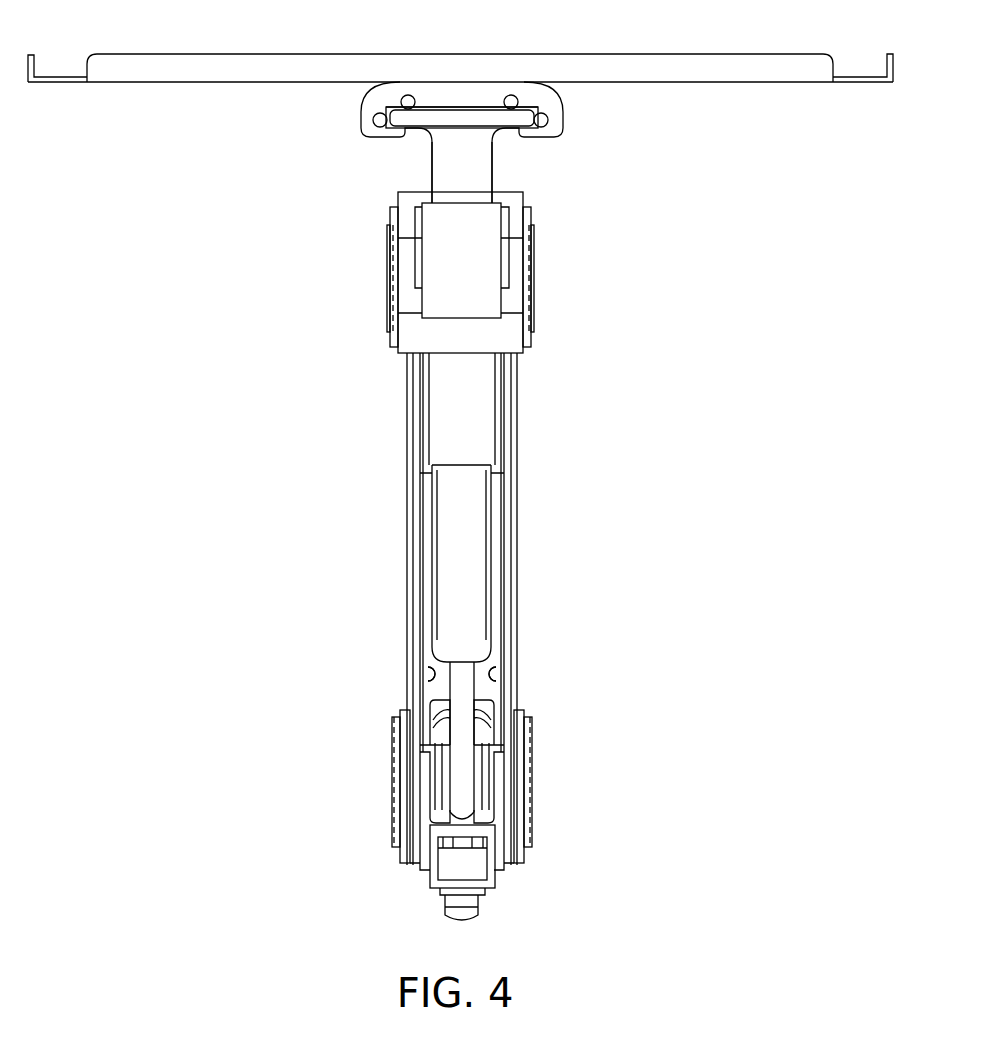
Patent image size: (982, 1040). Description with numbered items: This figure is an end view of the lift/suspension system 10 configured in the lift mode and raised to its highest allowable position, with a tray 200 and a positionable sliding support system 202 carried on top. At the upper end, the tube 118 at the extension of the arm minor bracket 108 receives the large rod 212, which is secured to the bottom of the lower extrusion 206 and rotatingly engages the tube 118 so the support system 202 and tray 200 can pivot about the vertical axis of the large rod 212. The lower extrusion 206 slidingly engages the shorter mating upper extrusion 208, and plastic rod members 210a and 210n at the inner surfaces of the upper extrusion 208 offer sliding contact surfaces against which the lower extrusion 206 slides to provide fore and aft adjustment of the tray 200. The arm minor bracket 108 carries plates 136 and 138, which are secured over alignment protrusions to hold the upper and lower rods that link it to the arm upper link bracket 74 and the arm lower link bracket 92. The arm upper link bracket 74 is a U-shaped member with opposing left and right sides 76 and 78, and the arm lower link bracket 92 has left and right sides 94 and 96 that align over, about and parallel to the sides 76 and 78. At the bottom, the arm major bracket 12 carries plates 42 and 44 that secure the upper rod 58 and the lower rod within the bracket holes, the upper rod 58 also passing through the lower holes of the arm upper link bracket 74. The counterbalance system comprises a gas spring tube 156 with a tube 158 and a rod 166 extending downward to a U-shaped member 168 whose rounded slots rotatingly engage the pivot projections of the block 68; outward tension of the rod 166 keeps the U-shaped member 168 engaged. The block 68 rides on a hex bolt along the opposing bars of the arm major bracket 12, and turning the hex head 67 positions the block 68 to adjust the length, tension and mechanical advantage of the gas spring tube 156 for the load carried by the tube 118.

The lift/suspension system 10 is at (228, 381).
The arm major bracket 12 is at (543, 779).
The plate 42 is at (397, 803).
The plate 44 is at (533, 806).
The upper rod 58 is at (485, 735).
The hex head 67 is at (465, 915).
The block 68 is at (452, 868).
The arm upper link bracket 74 is at (507, 662).
The left side 76 is at (431, 677).
The right side 78 is at (491, 678).
The arm lower link bracket 92 is at (405, 498).
The left side 94 is at (408, 538).
The right side 96 is at (515, 570).
The arm minor bracket 108 is at (542, 250).
The tube 118 is at (488, 278).
The plate 136 is at (389, 301).
The plate 138 is at (537, 302).
The gas spring tube 156 is at (462, 543).
The tube 158 is at (475, 503).
The rod 166 is at (463, 692).
The U-shaped member 168 is at (477, 820).
The tray 200 is at (732, 92).
The positionable sliding support system 202 is at (568, 137).
The lower extrusion 206 is at (462, 118).
The upper extrusion 208 is at (433, 90).
The plastic rod member 210a is at (380, 119).
The plastic rod member 210n is at (542, 120).
The large rod 212 is at (440, 160).